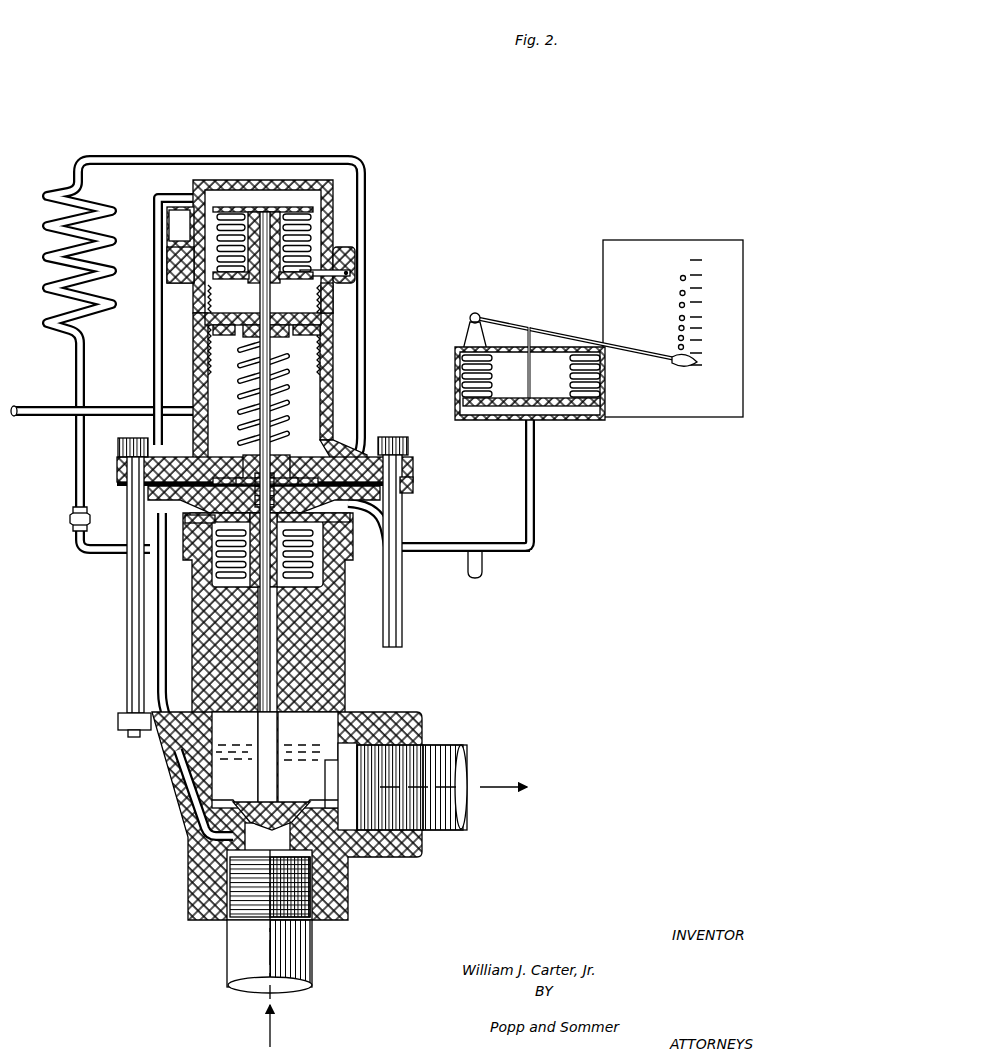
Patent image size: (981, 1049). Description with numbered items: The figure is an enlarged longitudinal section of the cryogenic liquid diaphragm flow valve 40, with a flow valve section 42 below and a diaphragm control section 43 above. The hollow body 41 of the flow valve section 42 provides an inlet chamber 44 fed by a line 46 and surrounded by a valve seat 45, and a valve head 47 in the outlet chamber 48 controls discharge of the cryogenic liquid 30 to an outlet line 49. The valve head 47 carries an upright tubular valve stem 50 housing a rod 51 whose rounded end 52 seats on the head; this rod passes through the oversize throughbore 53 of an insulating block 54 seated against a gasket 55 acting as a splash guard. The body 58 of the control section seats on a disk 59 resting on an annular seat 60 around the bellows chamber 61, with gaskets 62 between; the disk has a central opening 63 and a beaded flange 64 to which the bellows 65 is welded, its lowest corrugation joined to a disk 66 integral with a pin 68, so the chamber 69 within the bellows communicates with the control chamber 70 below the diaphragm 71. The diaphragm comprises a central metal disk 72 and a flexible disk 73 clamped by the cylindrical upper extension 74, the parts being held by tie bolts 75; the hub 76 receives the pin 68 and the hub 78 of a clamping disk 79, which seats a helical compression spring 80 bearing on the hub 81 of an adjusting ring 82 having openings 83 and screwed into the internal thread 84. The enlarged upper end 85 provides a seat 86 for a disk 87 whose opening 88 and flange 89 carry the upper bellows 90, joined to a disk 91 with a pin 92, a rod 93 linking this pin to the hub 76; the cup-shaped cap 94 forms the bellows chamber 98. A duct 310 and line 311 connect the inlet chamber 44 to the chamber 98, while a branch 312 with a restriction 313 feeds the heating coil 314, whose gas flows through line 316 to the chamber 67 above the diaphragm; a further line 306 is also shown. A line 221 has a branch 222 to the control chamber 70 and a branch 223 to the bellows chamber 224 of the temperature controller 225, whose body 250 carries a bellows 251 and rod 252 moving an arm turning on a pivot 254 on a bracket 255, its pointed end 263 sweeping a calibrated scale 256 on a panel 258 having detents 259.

The cryogenic liquid diaphragm flow valve 40 is at (113, 85).
The diaphragm control section 43 is at (190, 187).
The disk 91 is at (244, 206).
The bellows chamber 98 is at (312, 199).
The axially extensible metal bellows 90 is at (312, 217).
The upwardly projecting outwardly beaded annular flange 89 is at (300, 262).
The line 316 is at (368, 222).
The heating or gas generating coil 314 is at (42, 259).
The cup-shaped cap 94 is at (180, 245).
The enlarged upper end 85 is at (356, 262).
The seat 86 is at (345, 278).
The internal thread 84 is at (326, 305).
The disk 87 is at (205, 283).
The pin 92 is at (240, 280).
The through openings 83 is at (250, 313).
The central opening 88 is at (296, 290).
The line 311 is at (154, 344).
The downwardly projecting hub 81 is at (243, 330).
The externally threaded adjusting ring 82 is at (300, 336).
The chamber above the diaphragm 67 is at (232, 390).
The helical compression spring 80 is at (285, 358).
The supply pipe 306 is at (30, 405).
The rod 93 is at (272, 412).
The central hub 76 is at (276, 440).
The cylindrical metal upper extension 74 is at (330, 414).
The diaphragm 71 is at (190, 480).
The hub 78 is at (247, 468).
The clamping disk 79 is at (253, 474).
The central metal disk 72 is at (288, 481).
The flexible disk 73 is at (276, 475).
The body 58 is at (414, 487).
The disk 59 is at (207, 512).
The diaphragm or control chamber 70 is at (220, 511).
The central opening 63 is at (272, 512).
The pin 68 is at (290, 520).
The gaskets 62 is at (382, 519).
The branch 222 is at (450, 543).
The downwardly projecting outwardly beaded annular flange 64 is at (212, 555).
The axially extensible metal bellows 65 is at (226, 573).
The annular seat 60 is at (325, 548).
The chamber 69 is at (340, 562).
The bellows chamber 61 is at (322, 578).
The disk 66 is at (305, 575).
The tie bolts 75 is at (127, 613).
The rod 51 is at (270, 660).
The oversize throughbore 53 is at (290, 676).
The block or head of heat insulating material 54 is at (332, 692).
The gasket 55 is at (348, 715).
The upright tubular valve stem 50 is at (262, 736).
The outlet chamber 48 is at (330, 736).
The outlet line 49 is at (452, 747).
The duct 310 is at (185, 781).
The valve seat 45 is at (236, 810).
The cryogenic liquid 30 is at (312, 781).
The flow valve section 42 is at (182, 830).
The rounded contained end 52 is at (262, 828).
The valve head 47 is at (269, 883).
The hollow body 41 is at (190, 873).
The inlet chamber 44 is at (240, 857).
The line 46 is at (230, 951).
The panel 258 is at (631, 240).
The calibrated scale 256 is at (697, 256).
The temperature controller 225 is at (578, 298).
The pivot 254 is at (476, 312).
The detent projection or indentation 259 is at (678, 278).
The bracket 255 is at (465, 337).
The pointer 263 is at (630, 348).
The body 250 is at (456, 381).
The bellows 251 is at (490, 385).
The rod 252 is at (532, 360).
The bellows chamber 224 is at (495, 418).
The branch 223 is at (536, 505).
The line 221 is at (484, 573).
The branch 312 is at (75, 487).
The restriction 313 is at (72, 519).